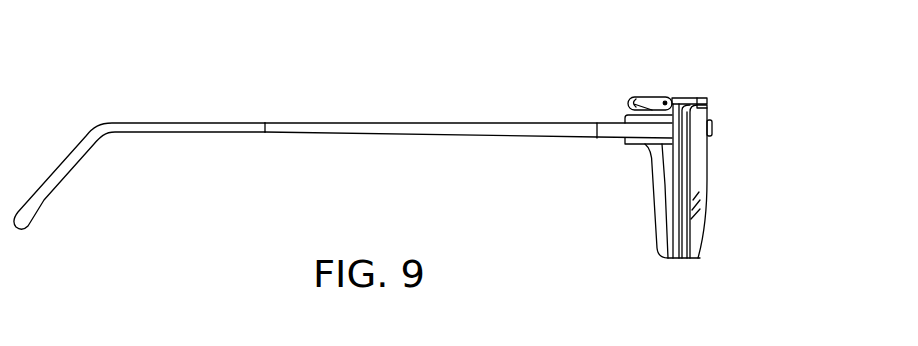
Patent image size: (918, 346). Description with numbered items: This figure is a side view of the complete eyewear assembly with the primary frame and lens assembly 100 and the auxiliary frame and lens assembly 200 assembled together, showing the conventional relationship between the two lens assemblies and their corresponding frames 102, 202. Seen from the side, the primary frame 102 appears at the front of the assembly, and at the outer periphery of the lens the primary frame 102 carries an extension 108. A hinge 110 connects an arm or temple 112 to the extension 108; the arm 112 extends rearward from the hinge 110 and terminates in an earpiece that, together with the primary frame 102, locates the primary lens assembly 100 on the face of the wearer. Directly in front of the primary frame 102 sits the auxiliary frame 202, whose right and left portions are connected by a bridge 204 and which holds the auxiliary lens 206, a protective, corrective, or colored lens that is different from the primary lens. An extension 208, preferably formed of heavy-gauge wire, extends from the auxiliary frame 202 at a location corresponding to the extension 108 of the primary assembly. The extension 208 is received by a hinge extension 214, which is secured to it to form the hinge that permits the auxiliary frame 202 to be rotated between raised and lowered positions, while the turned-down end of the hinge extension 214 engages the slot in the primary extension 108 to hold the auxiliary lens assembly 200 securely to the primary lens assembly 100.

The primary frame and lens assembly 100 is at (470, 86).
The primary frame 102 is at (655, 230).
The extension 108 is at (639, 131).
The hinge 110 is at (598, 140).
The arm 112 is at (447, 128).
The auxiliary frame and lens assembly 200 is at (733, 103).
The auxiliary frame 202 is at (695, 259).
The bridge 204 is at (713, 129).
The auxiliary lens 206 is at (698, 223).
The extension 208 is at (677, 98).
The hinge extension 214 is at (627, 108).